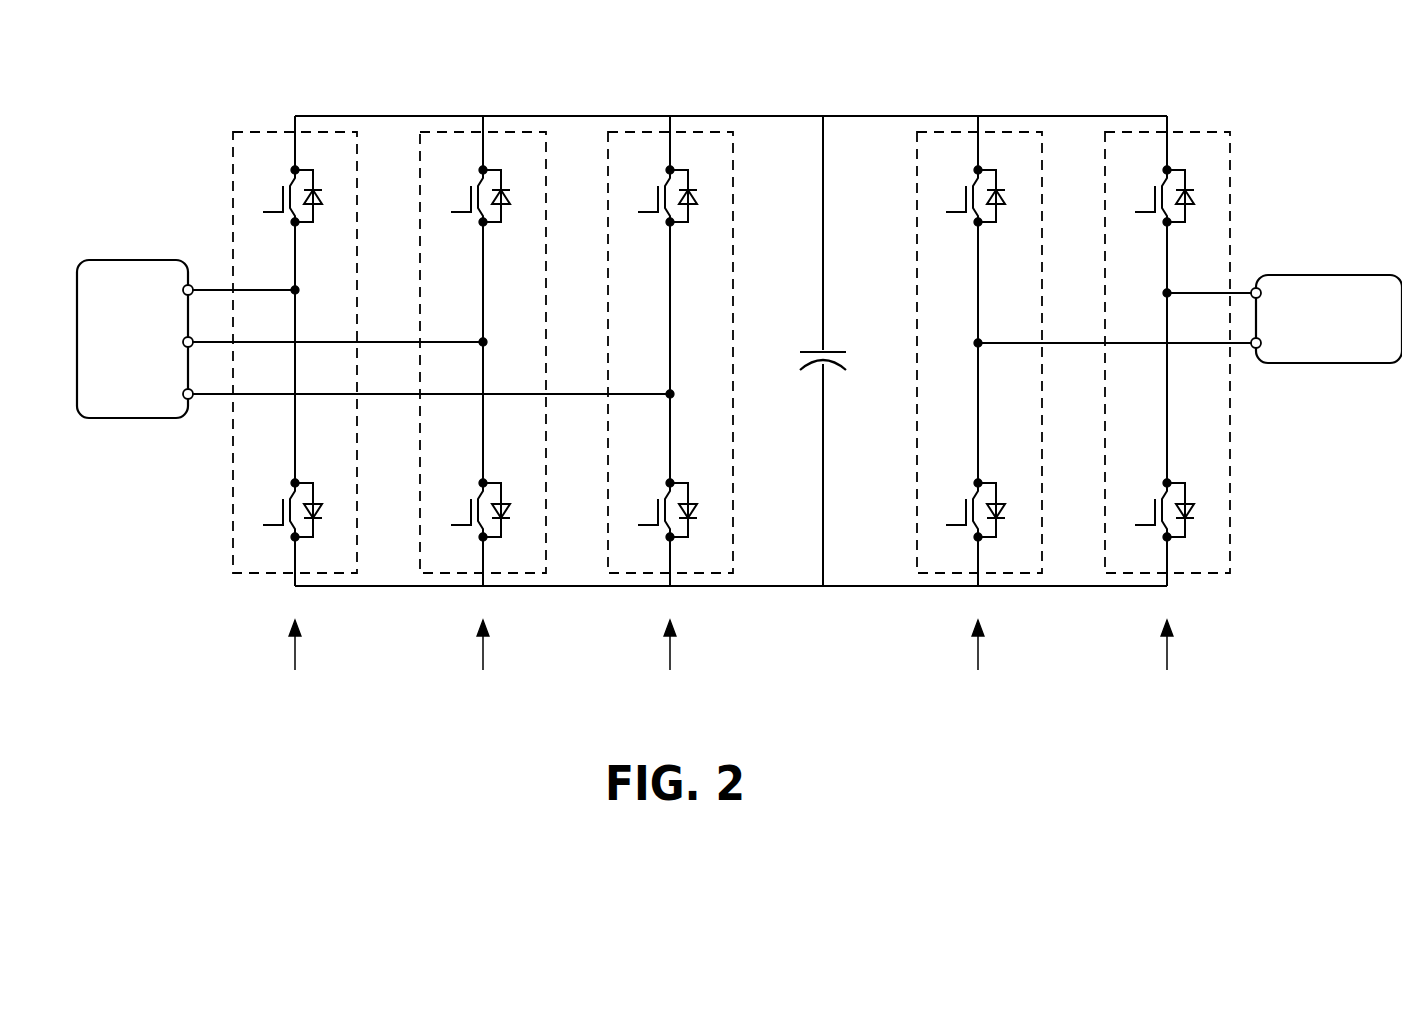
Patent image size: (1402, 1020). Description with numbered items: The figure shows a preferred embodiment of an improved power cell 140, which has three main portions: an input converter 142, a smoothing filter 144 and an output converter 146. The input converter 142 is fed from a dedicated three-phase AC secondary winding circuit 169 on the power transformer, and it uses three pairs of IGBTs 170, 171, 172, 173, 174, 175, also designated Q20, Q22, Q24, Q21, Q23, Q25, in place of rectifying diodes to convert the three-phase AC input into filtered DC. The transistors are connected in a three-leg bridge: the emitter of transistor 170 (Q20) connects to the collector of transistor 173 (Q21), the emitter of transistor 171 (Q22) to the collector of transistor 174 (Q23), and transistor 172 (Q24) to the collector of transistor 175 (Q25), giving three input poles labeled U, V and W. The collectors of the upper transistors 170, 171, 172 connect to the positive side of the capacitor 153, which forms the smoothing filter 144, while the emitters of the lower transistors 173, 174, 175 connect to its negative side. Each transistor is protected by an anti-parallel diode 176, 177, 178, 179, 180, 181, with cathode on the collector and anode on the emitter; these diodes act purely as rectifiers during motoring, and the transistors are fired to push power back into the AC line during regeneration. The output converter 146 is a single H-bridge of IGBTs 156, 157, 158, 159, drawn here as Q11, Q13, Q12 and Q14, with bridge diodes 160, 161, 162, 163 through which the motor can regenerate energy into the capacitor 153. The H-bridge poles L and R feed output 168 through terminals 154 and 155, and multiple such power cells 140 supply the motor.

The power cell 140 is at (178, 165).
The input converter 142 is at (735, 87).
The smoothing filter 144 is at (920, 87).
The output converter 146 is at (1230, 87).
The capacitor 153 is at (843, 358).
The output terminal 154 is at (1255, 290).
The output terminal 155 is at (1256, 350).
The IGBT 156 is at (973, 178).
The IGBT 157 is at (1162, 178).
The IGBT 158 is at (973, 528).
The IGBT 159 is at (1162, 528).
The bridge diode 160 is at (1003, 192).
The bridge diode 161 is at (1192, 192).
The bridge diode 162 is at (1003, 515).
The freewheeling diode of Q14 163 is at (1192, 515).
The output 168 is at (1364, 290).
The three-phase AC secondary winding circuit 169 is at (108, 274).
The IGBT 170 is at (290, 178).
The IGBT 171 is at (478, 178).
The IGBT 172 is at (665, 178).
The IGBT 173 is at (290, 528).
The IGBT 174 is at (478, 528).
The IGBT 175 is at (665, 528).
The anti-parallel diode 176 is at (320, 192).
The anti-parallel diode 177 is at (508, 192).
The anti-parallel diode 178 is at (695, 192).
The anti-parallel diode 179 is at (320, 515).
The anti-parallel diode 180 is at (508, 515).
The anti-parallel diode 181 is at (695, 515).
The transistor Q20 is at (317, 226).
The transistor Q21 is at (317, 481).
The transistor Q22 is at (505, 226).
The transistor Q23 is at (505, 481).
The transistor Q24 is at (692, 226).
The transistor Q25 is at (692, 481).
The switching transistor (IGBT) Q11 is at (1000, 226).
The switching transistor (IGBT) Q12 is at (1000, 481).
The switching transistor (IGBT) Q13 is at (1189, 226).
The switching transistor (IGBT) Q14 is at (1189, 481).